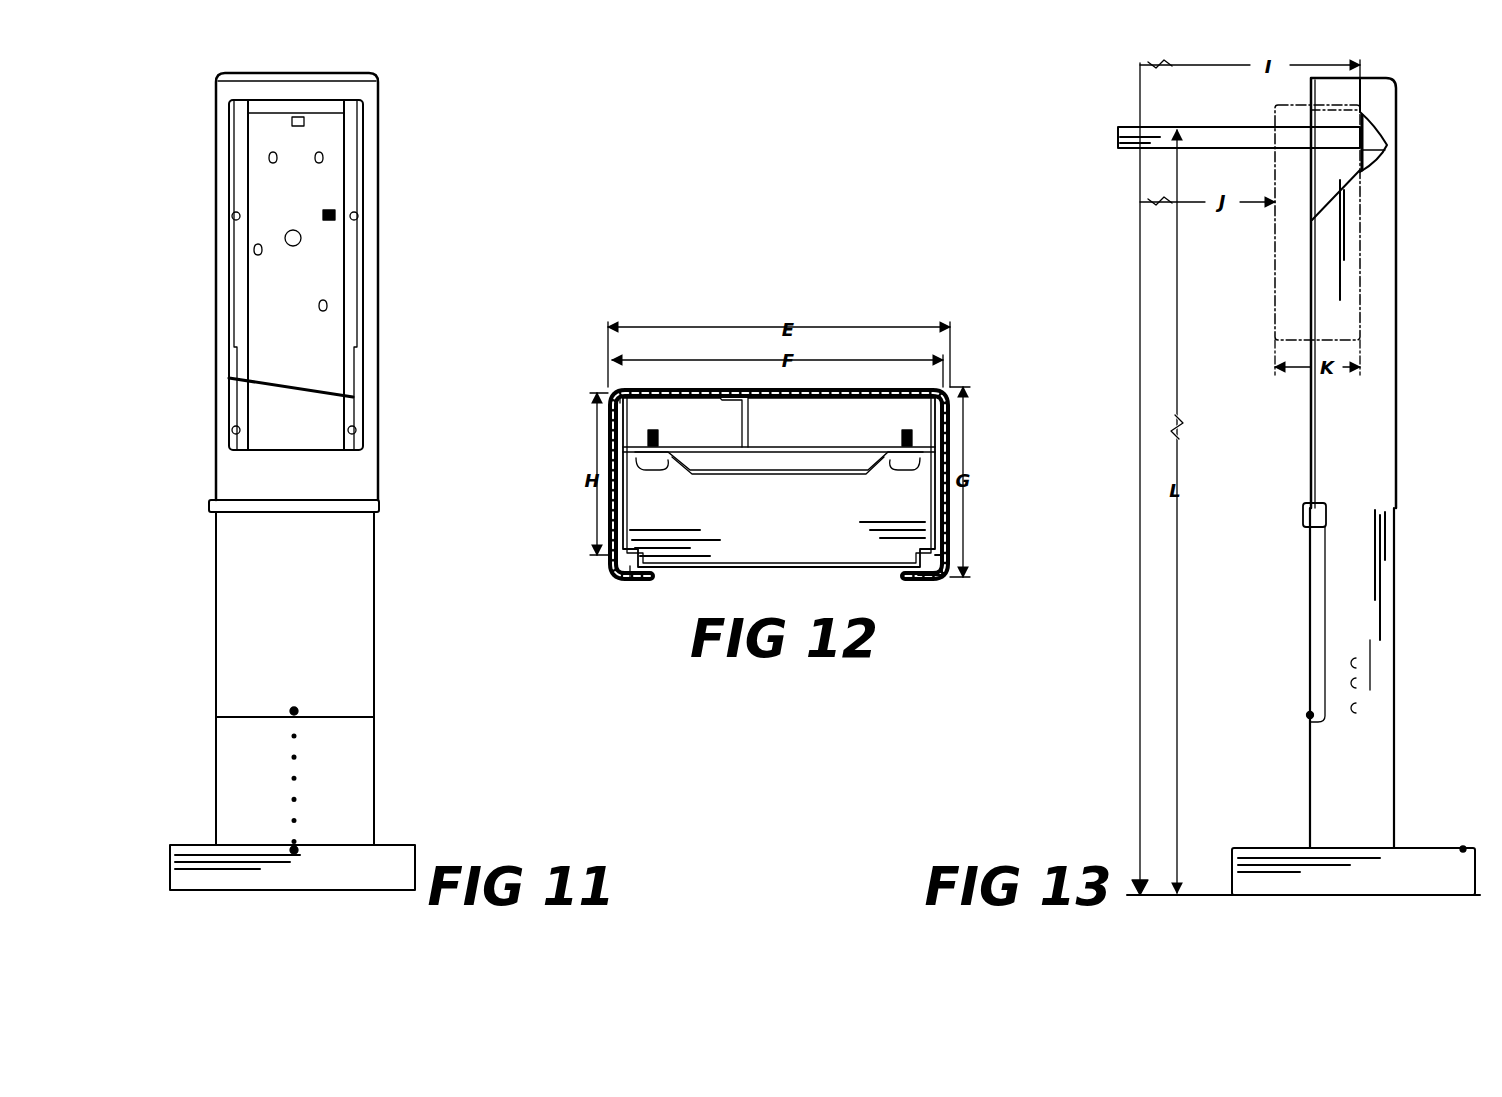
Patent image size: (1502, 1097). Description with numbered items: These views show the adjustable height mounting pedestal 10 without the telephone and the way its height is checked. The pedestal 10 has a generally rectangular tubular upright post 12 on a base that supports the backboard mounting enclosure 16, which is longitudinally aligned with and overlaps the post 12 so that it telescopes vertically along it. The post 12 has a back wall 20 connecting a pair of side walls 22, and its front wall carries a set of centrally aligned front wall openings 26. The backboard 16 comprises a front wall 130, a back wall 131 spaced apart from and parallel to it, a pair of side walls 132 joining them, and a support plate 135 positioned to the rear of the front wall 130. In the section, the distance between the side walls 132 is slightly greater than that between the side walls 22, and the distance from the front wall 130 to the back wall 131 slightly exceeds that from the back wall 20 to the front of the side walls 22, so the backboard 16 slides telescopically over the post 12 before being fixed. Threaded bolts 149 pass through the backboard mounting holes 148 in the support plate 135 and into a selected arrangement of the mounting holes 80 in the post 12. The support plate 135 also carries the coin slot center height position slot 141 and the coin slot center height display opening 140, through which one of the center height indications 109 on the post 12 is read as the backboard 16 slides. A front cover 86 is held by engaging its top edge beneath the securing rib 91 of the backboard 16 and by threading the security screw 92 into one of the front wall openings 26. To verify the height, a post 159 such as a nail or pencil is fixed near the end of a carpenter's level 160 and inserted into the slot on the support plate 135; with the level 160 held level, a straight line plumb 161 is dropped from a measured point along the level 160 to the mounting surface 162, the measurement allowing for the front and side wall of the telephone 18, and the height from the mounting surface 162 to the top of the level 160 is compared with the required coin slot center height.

In FIG. 11, the adjustable height mounting pedestal 10 is at (153, 440).
In FIG. 13, the adjustable height mounting pedestal 10 is at (1455, 445).
In FIG. 11, the upright post 12 is at (192, 112).
In FIG. 12, the upright post 12 is at (925, 555).
In FIG. 13, the upright post 12 is at (1380, 688).
In FIG. 11, the backboard mounting enclosure 16 is at (218, 210).
In FIG. 12, the backboard mounting enclosure 16 is at (612, 570).
In FIG. 13, the backboard mounting enclosure 16 is at (1375, 300).
In FIG. 13, the public or coin telephone 18 is at (1275, 230).
In FIG. 12, the back wall 20 is at (872, 394).
In FIG. 12, the side walls 22 is at (916, 520).
In FIG. 11, the front wall openings 26 is at (292, 779).
In FIG. 12, the mounting holes 80 is at (648, 442).
In FIG. 11, the front cover 86 is at (225, 597).
In FIG. 11, the securing rib 91 is at (255, 500).
In FIG. 13, the securing rib 91 is at (1301, 515).
In FIG. 11, the security screw 92 is at (296, 708).
In FIG. 11, the center height indications 109 is at (331, 222).
In FIG. 12, the front wall 130 is at (638, 577).
In FIG. 12, the back wall 131 is at (635, 385).
In FIG. 12, the side walls 132 is at (633, 500).
In FIG. 12, the support plate 135 is at (758, 475).
In FIG. 13, the support plate 135 is at (1375, 160).
In FIG. 11, the coin slot center height display opening 140 is at (290, 118).
In FIG. 13, the coin slot center height display opening 140 is at (1388, 145).
In FIG. 11, the coin slot center height position slot 141 is at (323, 192).
In FIG. 12, the backboard mounting holes 148 is at (675, 462).
In FIG. 12, the threaded bolts 149 is at (660, 437).
In FIG. 13, the post 159 is at (1365, 112).
In FIG. 13, the carpenter's level 160 is at (1258, 127).
In FIG. 13, the straight line plumb 161 is at (1140, 878).
In FIG. 13, the mounting surface 162 is at (1197, 893).